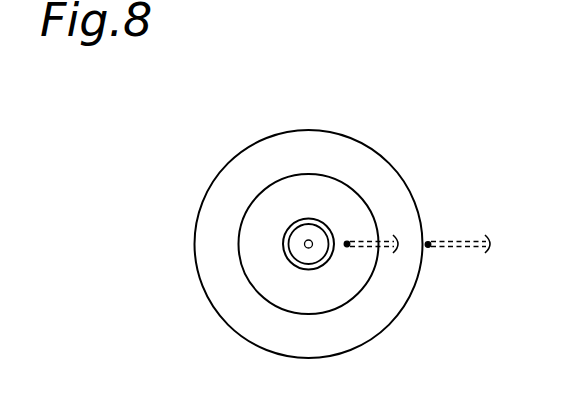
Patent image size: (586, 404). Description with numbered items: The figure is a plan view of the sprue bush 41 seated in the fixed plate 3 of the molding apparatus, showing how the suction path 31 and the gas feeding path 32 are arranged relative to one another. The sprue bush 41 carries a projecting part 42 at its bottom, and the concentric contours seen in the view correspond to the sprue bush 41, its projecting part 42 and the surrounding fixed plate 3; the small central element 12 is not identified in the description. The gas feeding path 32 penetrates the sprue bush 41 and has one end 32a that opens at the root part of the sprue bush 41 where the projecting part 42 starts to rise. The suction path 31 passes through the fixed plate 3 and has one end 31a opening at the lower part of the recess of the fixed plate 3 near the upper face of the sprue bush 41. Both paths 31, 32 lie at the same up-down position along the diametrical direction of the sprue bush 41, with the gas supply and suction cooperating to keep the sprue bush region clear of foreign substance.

The fixed plate 3 is at (385, 157).
The optical fiber 12 is at (305, 240).
The sprue bush 41 is at (307, 174).
The projecting part 42 is at (292, 263).
The gas feeding path 32 is at (387, 237).
The one end of the gas feeding path 32a is at (347, 247).
The suction path 31 is at (458, 238).
The one end of the suction path 31a is at (433, 247).